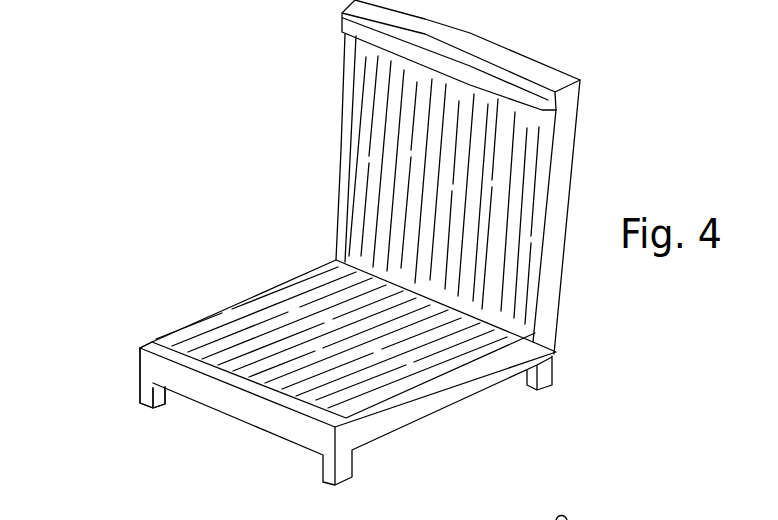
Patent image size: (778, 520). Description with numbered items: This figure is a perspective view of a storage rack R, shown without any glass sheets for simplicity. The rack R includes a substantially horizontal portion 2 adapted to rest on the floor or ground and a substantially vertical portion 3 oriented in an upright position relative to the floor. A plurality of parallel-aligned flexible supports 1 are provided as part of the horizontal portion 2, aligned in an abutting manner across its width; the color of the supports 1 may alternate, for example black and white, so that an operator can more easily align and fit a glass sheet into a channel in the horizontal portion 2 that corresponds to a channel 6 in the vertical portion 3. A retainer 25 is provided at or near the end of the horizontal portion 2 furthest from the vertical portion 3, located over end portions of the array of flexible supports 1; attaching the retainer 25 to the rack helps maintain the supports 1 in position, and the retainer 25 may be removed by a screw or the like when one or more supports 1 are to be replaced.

The storage rack R is at (140, 168).
The flexible supports 1 is at (307, 323).
The substantially horizontal portion 2 is at (443, 397).
The substantially vertical portion 3 is at (560, 168).
The channel 6 is at (360, 158).
The retainer 25 is at (157, 337).